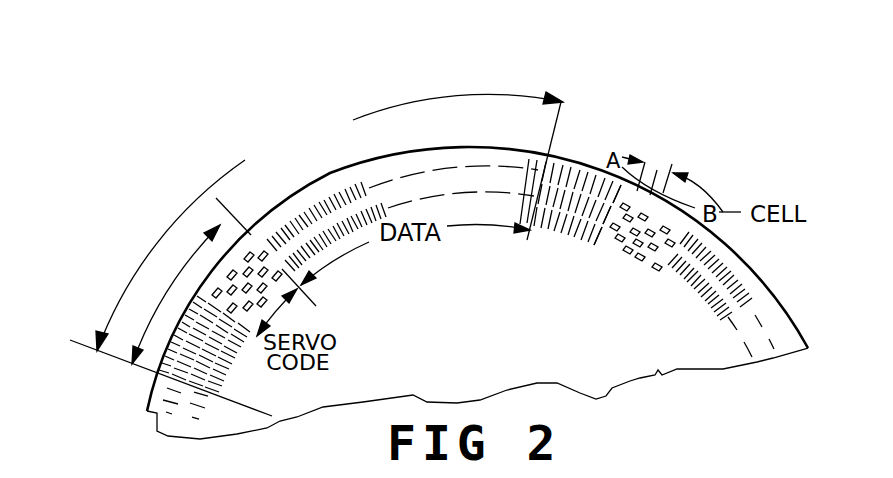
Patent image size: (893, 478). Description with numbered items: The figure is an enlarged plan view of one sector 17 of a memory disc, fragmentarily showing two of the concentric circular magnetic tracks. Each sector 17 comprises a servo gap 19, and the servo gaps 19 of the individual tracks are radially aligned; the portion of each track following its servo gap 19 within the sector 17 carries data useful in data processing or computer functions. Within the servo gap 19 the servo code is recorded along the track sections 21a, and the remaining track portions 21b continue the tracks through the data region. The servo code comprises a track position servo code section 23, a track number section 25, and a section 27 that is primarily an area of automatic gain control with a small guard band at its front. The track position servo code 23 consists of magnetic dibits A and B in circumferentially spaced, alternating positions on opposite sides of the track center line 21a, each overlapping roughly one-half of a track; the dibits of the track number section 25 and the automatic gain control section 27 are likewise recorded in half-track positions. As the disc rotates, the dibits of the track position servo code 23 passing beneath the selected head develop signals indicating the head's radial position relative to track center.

The sector 17 is at (316, 254).
The servo gap 19 is at (187, 281).
The track section 21a is at (616, 243).
The data track portion 21b is at (752, 299).
The track position servo code section 23 is at (641, 252).
The track number section 25 is at (581, 233).
The automatic gain control section 27 is at (544, 232).